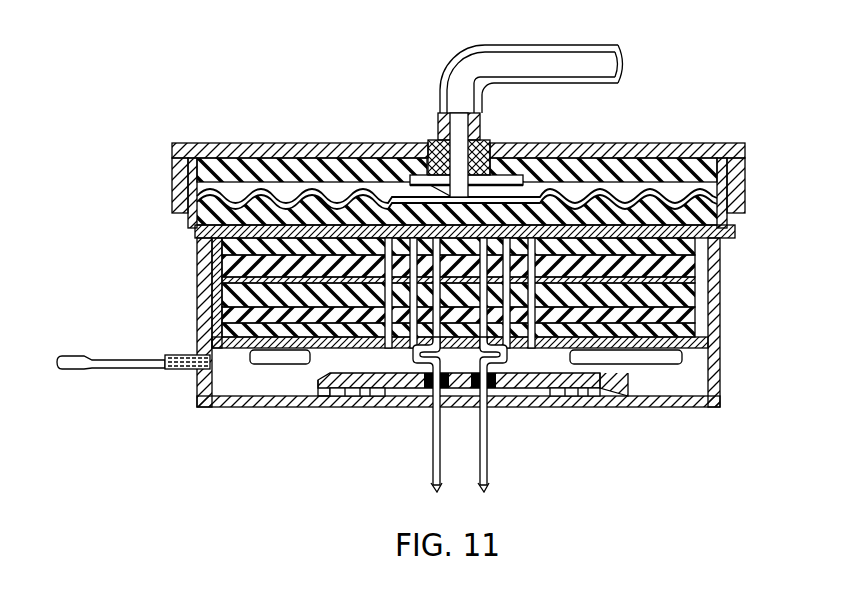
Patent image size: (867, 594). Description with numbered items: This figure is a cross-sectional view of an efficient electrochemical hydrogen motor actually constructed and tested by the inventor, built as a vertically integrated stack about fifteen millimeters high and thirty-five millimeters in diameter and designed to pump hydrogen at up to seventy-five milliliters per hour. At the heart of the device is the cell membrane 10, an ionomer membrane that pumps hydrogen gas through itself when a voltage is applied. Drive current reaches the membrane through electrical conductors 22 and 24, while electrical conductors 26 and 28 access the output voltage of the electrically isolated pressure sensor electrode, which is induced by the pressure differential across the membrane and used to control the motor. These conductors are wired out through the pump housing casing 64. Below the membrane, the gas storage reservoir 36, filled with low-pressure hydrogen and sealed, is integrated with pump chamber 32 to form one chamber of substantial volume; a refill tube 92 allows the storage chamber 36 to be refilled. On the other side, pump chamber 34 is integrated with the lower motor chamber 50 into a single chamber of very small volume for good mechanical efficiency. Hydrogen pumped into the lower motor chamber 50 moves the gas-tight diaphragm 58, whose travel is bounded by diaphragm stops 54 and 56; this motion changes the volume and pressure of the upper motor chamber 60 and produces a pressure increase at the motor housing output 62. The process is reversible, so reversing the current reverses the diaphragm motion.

The cell membrane 10 is at (706, 276).
The electrical conductor 22 is at (454, 416).
The electrical conductor 24 is at (490, 490).
The electrical conductor 26 is at (438, 488).
The electrical conductor 28 is at (428, 490).
The pump chamber 32 is at (429, 400).
The pump chamber 34 is at (413, 148).
The gas storage reservoir 36 is at (247, 387).
The lower motor chamber 50 is at (423, 172).
The diaphragm stop 54 is at (195, 232).
The diaphragm stop 56 is at (670, 167).
The diaphragm 58 is at (292, 190).
The upper motor chamber 60 is at (514, 178).
The motor housing output 62 is at (560, 67).
The pump housing casing 64 is at (630, 410).
The refill tube 92 is at (112, 354).